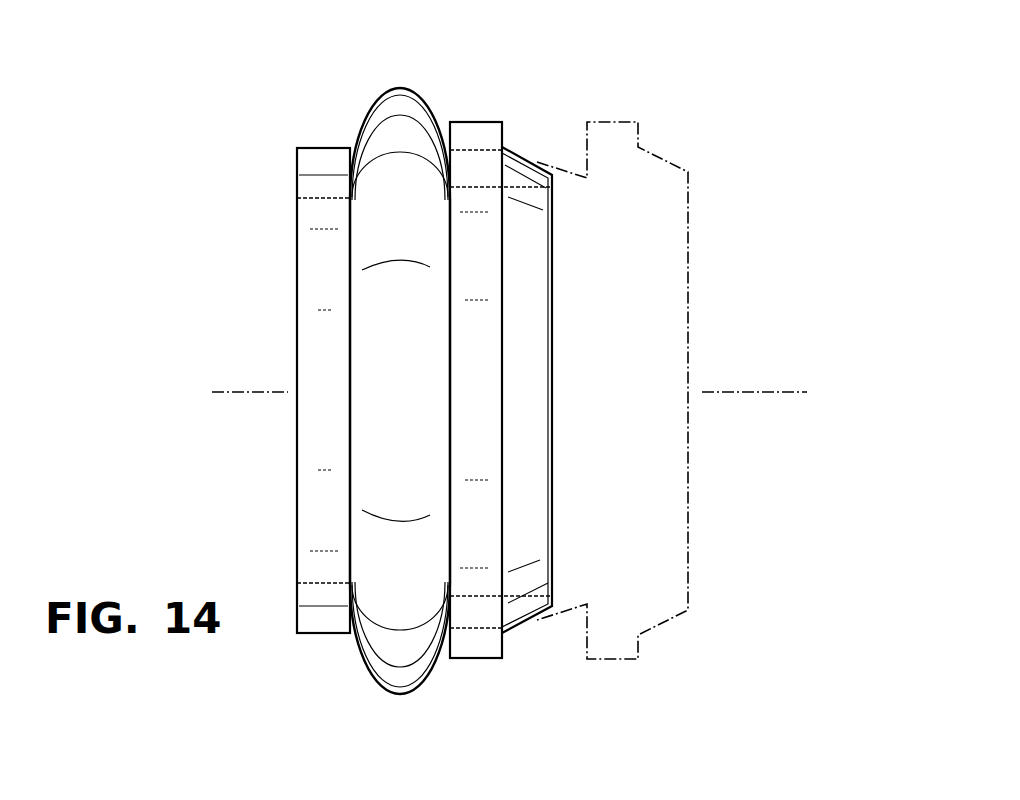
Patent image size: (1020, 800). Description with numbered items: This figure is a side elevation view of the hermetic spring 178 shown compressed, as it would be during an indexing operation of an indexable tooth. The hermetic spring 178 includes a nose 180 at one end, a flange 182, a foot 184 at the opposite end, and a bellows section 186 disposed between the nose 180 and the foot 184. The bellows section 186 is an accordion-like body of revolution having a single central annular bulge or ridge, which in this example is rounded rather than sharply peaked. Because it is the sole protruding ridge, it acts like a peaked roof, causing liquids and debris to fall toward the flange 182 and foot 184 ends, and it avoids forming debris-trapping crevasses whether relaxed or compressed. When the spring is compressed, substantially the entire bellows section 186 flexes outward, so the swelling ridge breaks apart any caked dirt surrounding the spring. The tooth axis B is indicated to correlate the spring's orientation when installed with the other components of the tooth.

The hermetic spring 178 is at (740, 178).
The nose 180 is at (528, 330).
The flange 182 is at (502, 648).
The foot 184 is at (293, 150).
The bellows section 186 is at (400, 107).
The tooth axis B is at (518, 393).